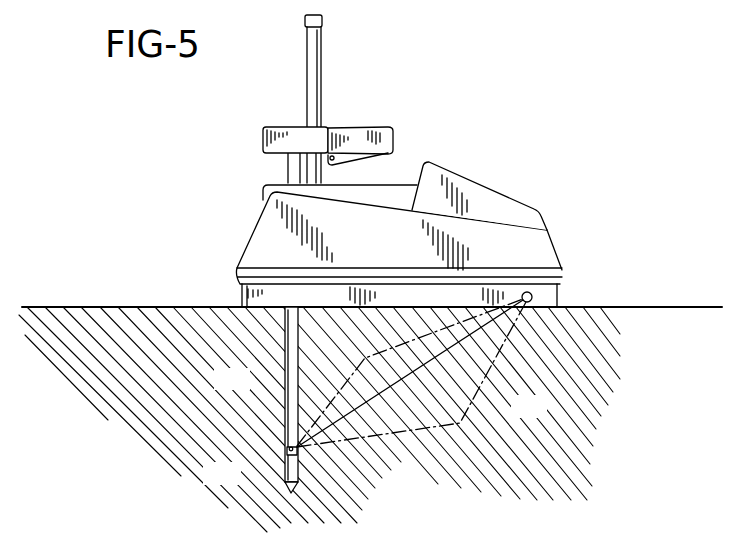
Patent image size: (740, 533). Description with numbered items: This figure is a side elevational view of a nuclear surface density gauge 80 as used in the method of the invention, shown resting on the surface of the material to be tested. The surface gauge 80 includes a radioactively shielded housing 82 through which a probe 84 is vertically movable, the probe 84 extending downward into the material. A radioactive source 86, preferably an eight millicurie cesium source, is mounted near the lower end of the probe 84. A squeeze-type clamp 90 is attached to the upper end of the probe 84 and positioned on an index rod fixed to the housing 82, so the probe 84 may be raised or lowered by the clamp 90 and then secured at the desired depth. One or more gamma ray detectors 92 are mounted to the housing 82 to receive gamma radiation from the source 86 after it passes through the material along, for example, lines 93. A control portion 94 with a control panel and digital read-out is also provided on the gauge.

The surface gauge 80 is at (411, 161).
The radioactively shielded housing 82 is at (260, 238).
The probe 84 is at (288, 378).
The radioactive source 86 is at (287, 450).
The squeeze-type clamp 90 is at (272, 137).
The gamma ray detectors 92 is at (532, 296).
The lines 93 is at (443, 353).
The control portion 94 is at (478, 192).